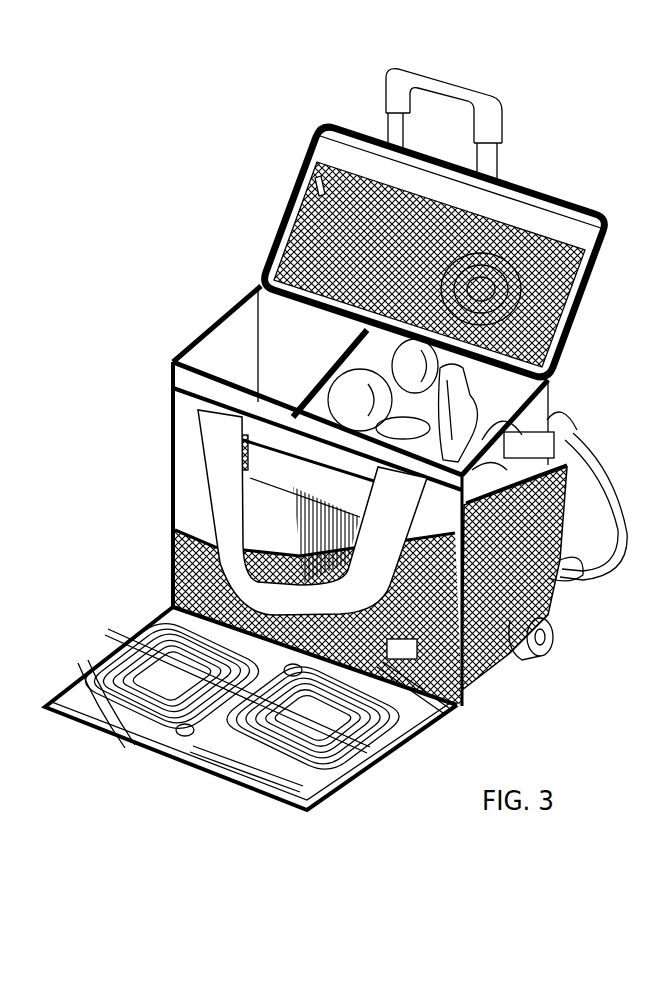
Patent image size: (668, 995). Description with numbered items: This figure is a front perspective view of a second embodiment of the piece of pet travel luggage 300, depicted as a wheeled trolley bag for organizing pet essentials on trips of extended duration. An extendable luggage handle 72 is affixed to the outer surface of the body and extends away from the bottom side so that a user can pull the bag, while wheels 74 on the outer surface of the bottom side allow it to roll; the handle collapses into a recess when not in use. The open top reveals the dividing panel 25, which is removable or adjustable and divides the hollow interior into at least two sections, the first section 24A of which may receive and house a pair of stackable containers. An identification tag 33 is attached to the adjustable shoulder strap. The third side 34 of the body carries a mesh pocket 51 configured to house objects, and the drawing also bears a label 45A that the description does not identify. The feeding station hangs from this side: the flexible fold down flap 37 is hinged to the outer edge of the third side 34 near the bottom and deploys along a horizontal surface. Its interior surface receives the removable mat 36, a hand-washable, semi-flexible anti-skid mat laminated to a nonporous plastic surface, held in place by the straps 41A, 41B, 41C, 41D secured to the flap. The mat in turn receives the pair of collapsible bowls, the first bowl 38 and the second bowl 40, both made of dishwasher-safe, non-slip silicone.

The piece of pet travel luggage 300 is at (570, 108).
The extendable luggage handle 72 is at (443, 80).
The first section 24A is at (277, 322).
The dividing panel 25 is at (353, 360).
The third side 34 is at (197, 450).
The identification tag 33 is at (562, 433).
The front mesh panel 45A is at (173, 560).
The mesh pocket 51 is at (393, 657).
The wheels 74 is at (547, 657).
The removable mat 36 is at (190, 763).
The flexible fold down flap 37 is at (307, 803).
The first bowl 38 is at (150, 675).
The second bowl 40 is at (393, 747).
The strap 41A is at (443, 713).
The strap 41B is at (243, 775).
The strap 41C is at (110, 725).
The strap 41D is at (153, 633).